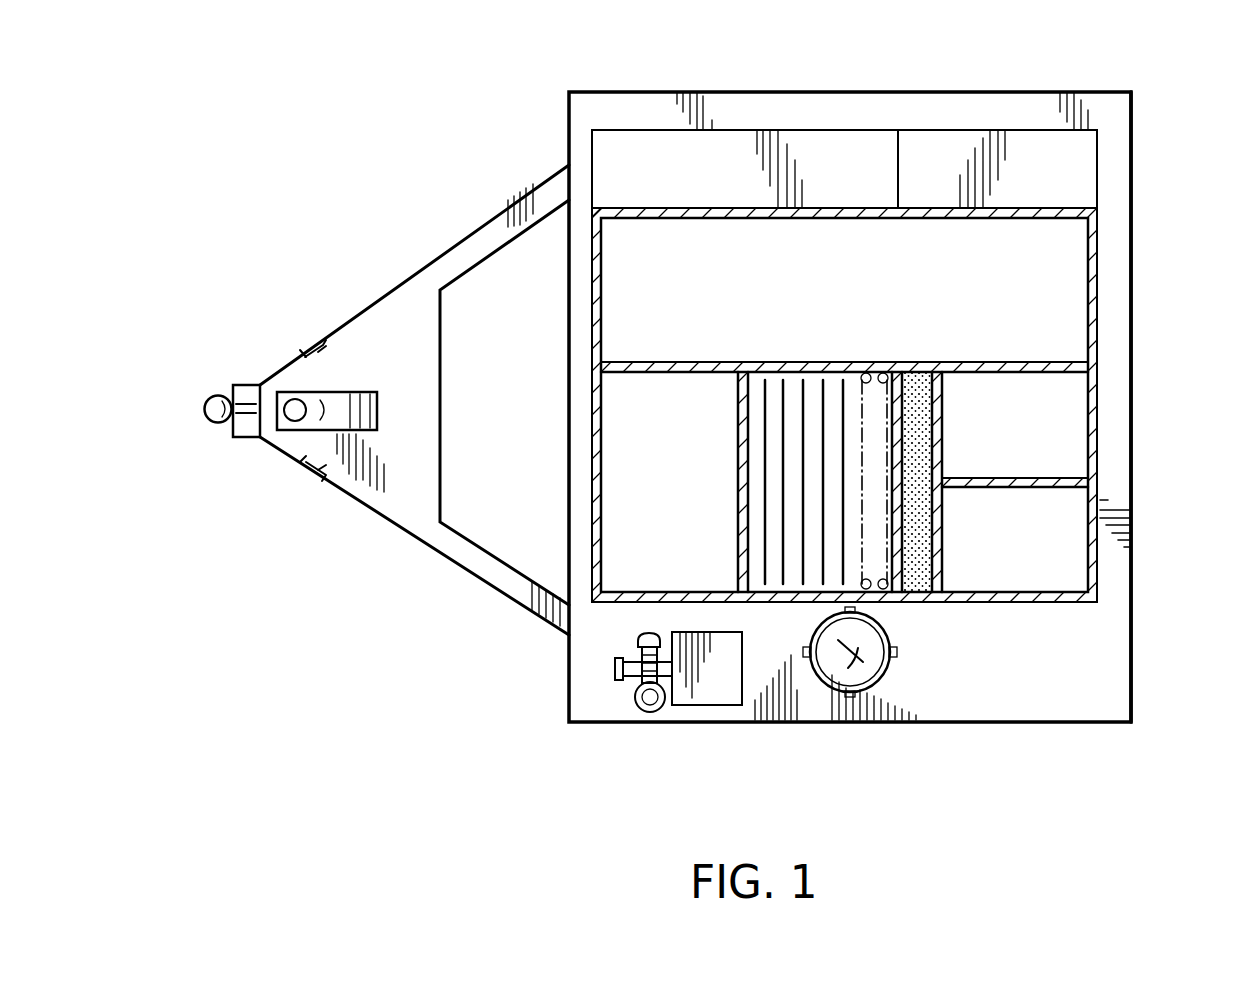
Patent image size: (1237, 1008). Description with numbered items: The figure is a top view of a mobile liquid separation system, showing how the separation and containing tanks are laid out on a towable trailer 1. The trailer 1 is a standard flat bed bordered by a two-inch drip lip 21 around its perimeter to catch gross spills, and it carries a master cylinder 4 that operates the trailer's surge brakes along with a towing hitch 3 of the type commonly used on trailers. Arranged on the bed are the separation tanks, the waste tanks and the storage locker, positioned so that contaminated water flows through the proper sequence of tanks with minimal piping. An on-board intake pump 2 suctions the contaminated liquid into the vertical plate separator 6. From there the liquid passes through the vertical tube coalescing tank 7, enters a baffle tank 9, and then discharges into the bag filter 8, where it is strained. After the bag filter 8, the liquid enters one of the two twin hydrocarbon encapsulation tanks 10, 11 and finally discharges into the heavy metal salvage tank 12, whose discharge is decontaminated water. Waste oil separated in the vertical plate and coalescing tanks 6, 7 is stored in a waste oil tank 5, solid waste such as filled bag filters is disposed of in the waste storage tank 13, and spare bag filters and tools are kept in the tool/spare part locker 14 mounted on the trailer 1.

The towable trailer 1 is at (593, 695).
The intake pump 2 is at (650, 706).
The hitch ball coupler 3 is at (212, 395).
The master cylinder 4 is at (296, 405).
The waste oil tank 5 is at (527, 535).
The vertical plate separator 6 is at (680, 468).
The vertical tube coalescing tank 7 is at (777, 600).
The bag filter 8 is at (852, 650).
The baffle tank 9 is at (915, 595).
The hydrocarbon encapsulation tank 10 is at (1032, 556).
The hydrocarbon encapsulation tank 11 is at (1018, 444).
The heavy metal salvage tank 12 is at (870, 296).
The waste storage tank 13 is at (1003, 152).
The tool/spare part locker 14 is at (727, 168).
The drip lip 21 is at (1135, 570).